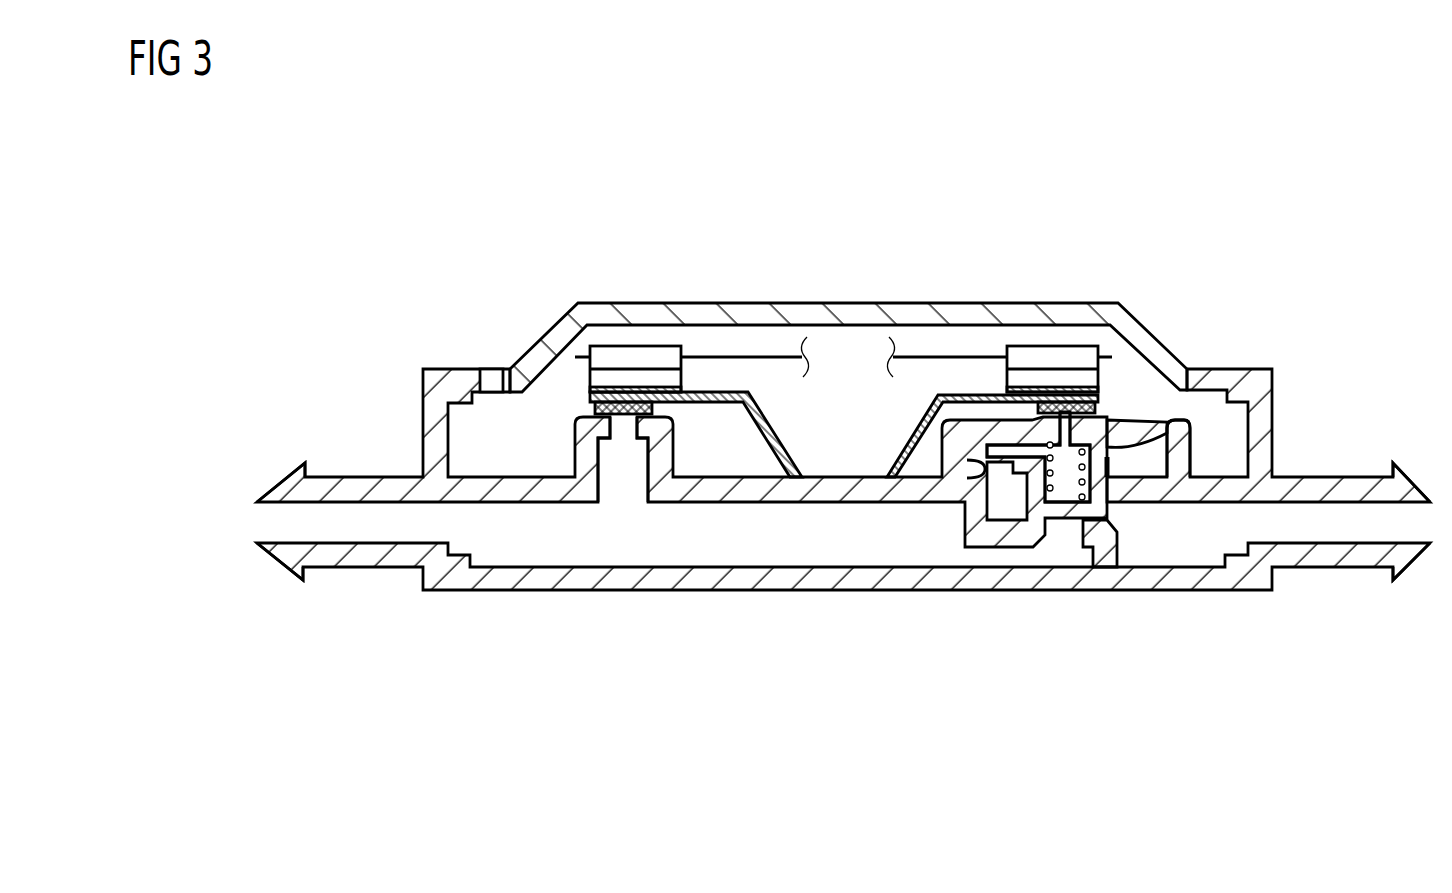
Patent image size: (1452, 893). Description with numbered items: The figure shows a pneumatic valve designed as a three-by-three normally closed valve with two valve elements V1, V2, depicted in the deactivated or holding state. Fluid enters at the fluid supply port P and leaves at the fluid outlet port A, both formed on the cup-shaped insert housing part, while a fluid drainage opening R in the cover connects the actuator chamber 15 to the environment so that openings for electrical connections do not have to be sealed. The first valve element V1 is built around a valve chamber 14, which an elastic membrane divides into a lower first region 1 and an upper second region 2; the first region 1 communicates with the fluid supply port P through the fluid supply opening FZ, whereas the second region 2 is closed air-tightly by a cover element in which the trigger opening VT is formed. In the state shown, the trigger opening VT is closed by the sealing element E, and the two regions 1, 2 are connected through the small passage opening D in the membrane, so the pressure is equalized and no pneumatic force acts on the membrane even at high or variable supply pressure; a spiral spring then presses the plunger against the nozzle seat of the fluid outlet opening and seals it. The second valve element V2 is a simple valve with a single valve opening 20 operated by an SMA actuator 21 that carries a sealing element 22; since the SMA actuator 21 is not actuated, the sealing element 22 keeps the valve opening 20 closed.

The first region 1 is at (1008, 495).
The second region 2 is at (1003, 450).
The valve chamber 14 is at (1115, 400).
The actuator chamber 15 is at (845, 393).
The valve opening 20 is at (623, 432).
The SMA actuator 21 is at (698, 385).
The sealing element 22 is at (623, 403).
The fluid outlet port A is at (294, 521).
The fluid supply port P is at (1107, 472).
The fluid drainage opening R is at (491, 359).
The sealing element E is at (1073, 418).
The passage opening D is at (1147, 493).
The trigger opening VT is at (1110, 435).
The fluid supply opening FZ is at (1057, 449).
The first valve element V1 is at (1052, 324).
The second valve element V2 is at (635, 325).